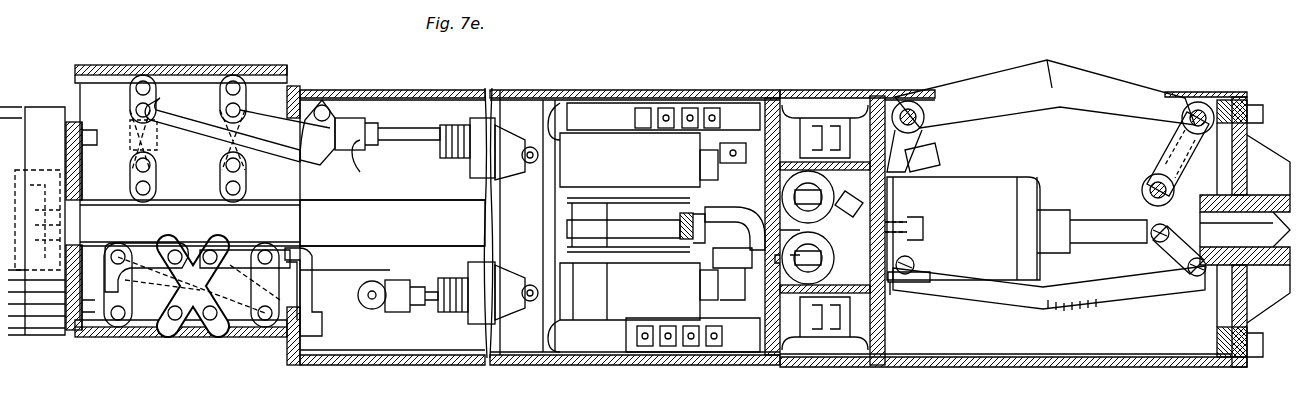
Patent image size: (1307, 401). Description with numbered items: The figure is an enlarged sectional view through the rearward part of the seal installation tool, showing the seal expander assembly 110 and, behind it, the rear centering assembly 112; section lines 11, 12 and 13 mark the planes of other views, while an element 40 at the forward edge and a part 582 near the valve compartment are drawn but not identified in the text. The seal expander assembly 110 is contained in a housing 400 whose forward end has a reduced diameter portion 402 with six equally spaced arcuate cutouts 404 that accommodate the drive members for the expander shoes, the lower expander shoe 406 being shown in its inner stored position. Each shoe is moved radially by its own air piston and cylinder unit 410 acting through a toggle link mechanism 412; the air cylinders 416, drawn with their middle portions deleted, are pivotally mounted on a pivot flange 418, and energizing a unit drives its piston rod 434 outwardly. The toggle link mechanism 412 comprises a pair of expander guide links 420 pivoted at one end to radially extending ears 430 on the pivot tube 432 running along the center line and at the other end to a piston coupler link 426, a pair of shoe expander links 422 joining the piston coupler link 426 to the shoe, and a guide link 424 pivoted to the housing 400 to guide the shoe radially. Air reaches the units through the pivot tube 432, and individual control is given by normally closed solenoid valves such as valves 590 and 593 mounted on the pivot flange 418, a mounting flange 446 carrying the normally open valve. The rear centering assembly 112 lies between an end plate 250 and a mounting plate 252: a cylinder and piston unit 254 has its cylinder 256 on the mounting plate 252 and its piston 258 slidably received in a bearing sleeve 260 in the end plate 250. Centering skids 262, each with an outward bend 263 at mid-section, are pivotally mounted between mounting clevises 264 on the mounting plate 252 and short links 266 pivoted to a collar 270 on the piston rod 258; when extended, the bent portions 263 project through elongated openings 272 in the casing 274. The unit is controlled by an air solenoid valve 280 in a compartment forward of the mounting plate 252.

The section line 11 is at (148, 22).
The section line 12 is at (715, 47).
The section line 13 is at (830, 47).
The housing end body 40 is at (70, 118).
The seal expander assembly 110 is at (390, 78).
The rear centering assembly 112 is at (1118, 75).
The end plate 250 is at (1255, 140).
The mounting plate 252 is at (900, 325).
The cylinder and piston unit 254 is at (1005, 175).
The cylinder 256 is at (952, 178).
The piston rod 258 is at (1105, 215).
The bearing sleeve 260 is at (1262, 272).
The centering skids 262 is at (1120, 305).
The outward bend 263 is at (1055, 88).
The mounting clevises 264 is at (898, 298).
The short links 266 is at (1170, 262).
The collar 270 is at (1265, 177).
The elongated openings 272 is at (1180, 90).
The casing 274 is at (1002, 365).
The air solenoid valve 280 is at (820, 172).
The housing 400 is at (520, 90).
The reduced diameter portion 402 is at (137, 328).
The arcuate cutouts 404 is at (95, 130).
The expander shoe 406 is at (192, 333).
The air piston and cylinder unit 410 is at (495, 320).
The toggle link mechanism 412 is at (325, 98).
The air cylinders 416 is at (477, 323).
The pivot flange 418 is at (550, 345).
The expander guide links 420 is at (258, 228).
The shoe expander links 422 is at (235, 316).
The guide link 424 is at (334, 203).
The piston coupler link 426 is at (340, 250).
The radially extending ears 430 is at (100, 225).
The pivot tube 432 is at (431, 183).
The piston rods 434 is at (440, 128).
The mounting flange 446 is at (786, 108).
The coupling shaft 582 is at (808, 280).
The normally closed solenoid valve 590 is at (640, 302).
The normally closed solenoid valve 593 is at (642, 150).